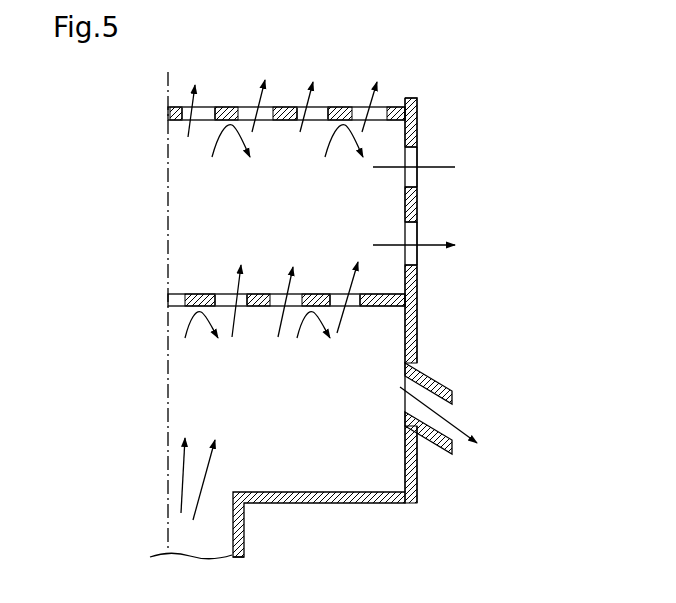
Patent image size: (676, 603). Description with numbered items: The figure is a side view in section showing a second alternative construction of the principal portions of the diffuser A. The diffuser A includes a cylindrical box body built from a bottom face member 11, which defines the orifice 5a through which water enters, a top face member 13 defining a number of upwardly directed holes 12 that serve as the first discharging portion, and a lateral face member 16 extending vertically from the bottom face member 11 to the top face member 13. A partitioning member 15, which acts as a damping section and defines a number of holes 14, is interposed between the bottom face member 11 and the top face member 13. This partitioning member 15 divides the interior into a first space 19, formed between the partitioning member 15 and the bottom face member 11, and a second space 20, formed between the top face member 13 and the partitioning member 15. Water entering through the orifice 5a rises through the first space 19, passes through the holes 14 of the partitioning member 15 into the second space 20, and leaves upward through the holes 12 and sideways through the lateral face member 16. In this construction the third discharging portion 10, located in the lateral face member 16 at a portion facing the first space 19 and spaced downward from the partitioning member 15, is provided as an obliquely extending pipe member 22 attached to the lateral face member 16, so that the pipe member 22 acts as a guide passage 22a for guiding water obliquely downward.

The orifice 5a is at (232, 508).
The third discharging portion 10 is at (490, 447).
The bottom face member 11 is at (313, 505).
The upwardly directed holes 12 is at (323, 108).
The top face member 13 is at (287, 108).
The holes 14 is at (330, 292).
The partitioning member 15 is at (257, 293).
The lateral face member 16 is at (418, 282).
The first space 19 is at (310, 390).
The second space 20 is at (317, 170).
The obliquely extending pipe member 22 is at (440, 383).
The guide passage 22a is at (442, 408).
The diffuser A is at (466, 116).